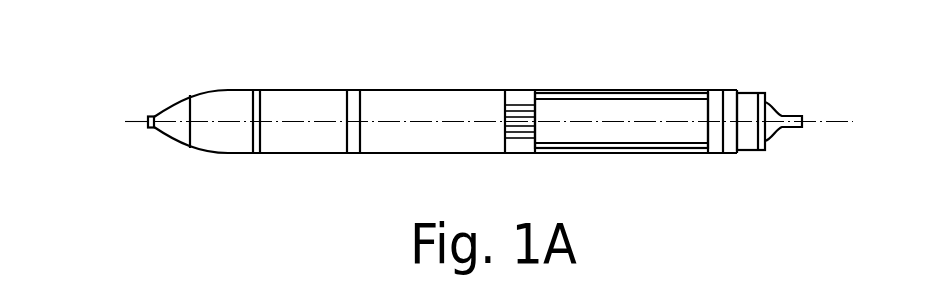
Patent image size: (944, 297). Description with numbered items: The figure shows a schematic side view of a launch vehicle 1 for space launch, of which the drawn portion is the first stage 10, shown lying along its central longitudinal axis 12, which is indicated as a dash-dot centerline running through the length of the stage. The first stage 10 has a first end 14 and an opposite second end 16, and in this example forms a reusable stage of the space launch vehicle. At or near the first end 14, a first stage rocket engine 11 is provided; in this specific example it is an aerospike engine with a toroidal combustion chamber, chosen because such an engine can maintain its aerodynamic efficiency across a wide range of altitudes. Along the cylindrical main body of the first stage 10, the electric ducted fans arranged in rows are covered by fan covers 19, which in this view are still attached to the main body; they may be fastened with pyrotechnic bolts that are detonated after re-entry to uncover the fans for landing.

The launch vehicle 1 is at (100, 122).
The first stage 10 is at (800, 78).
The first stage rocket engine 11 is at (782, 104).
The central longitudinal axis 12 is at (511, 127).
The first end 14 is at (768, 153).
The second end 16 is at (353, 157).
The fan cover 19 is at (655, 153).